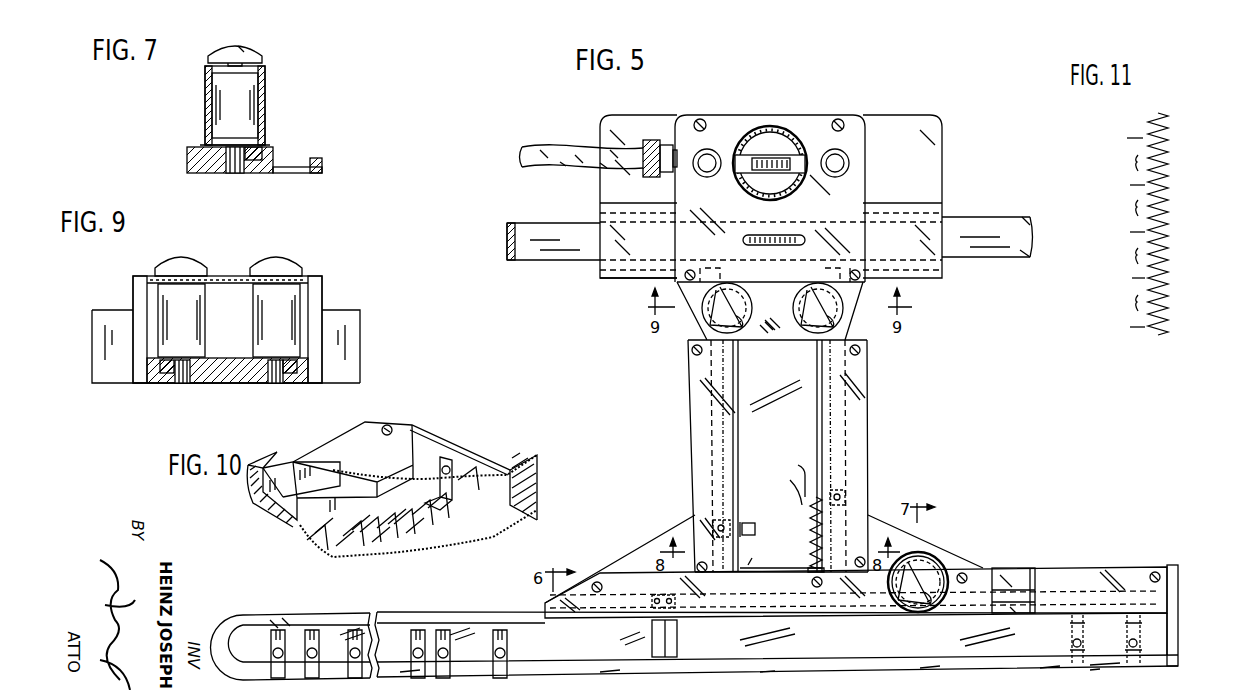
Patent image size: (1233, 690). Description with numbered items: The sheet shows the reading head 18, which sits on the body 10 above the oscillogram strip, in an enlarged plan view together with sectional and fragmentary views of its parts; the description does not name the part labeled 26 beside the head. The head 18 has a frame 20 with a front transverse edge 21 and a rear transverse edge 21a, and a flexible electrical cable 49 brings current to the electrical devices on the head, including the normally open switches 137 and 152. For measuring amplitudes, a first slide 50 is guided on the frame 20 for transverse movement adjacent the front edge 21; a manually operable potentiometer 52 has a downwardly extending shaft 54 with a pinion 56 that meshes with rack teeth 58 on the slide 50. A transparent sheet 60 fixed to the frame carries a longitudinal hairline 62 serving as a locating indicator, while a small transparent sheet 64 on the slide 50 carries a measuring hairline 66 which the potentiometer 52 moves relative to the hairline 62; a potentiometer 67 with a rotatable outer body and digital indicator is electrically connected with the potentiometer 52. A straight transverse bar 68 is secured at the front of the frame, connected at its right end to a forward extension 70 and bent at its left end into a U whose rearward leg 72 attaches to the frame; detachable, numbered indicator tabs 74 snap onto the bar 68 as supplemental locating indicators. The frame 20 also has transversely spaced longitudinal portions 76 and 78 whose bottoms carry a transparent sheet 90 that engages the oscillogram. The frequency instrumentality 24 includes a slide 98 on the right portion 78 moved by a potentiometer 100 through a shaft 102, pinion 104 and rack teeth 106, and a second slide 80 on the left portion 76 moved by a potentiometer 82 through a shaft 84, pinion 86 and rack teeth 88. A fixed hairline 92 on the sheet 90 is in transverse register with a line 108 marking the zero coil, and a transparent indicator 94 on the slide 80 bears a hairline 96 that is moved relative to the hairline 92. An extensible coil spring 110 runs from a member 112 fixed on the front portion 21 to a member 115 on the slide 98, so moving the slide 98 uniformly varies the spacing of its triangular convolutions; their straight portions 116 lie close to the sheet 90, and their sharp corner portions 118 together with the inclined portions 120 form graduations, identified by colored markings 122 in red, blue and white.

In FIG. 5, the body 10 is at (812, 532).
In FIG. 5, the reading head 18 is at (600, 279).
In FIG. 10, the frame 20 is at (537, 490).
In FIG. 5, the frame 20 is at (688, 392).
In FIG. 7, the front transverse edge 21 is at (187, 160).
In FIG. 5, the front transverse edge 21 is at (855, 616).
In FIG. 5, the rear transverse edge 21a is at (893, 116).
In FIG. 5, the instrumentality for reading frequency 24 is at (866, 491).
In FIG. 5, the pipe 26 is at (560, 235).
In FIG. 5, the flexible electrical cable 49 is at (566, 150).
In FIG. 7, the first slide 50 is at (262, 160).
In FIG. 5, the first slide 50 is at (1010, 577).
In FIG. 7, the manually operable potentiometer 52 is at (262, 53).
In FIG. 5, the manually operable potentiometer 52 is at (930, 558).
In FIG. 7, the shaft 54 is at (237, 173).
In FIG. 7, the pinion 56 is at (228, 173).
In FIG. 5, the pinion 56 is at (950, 566).
In FIG. 7, the rack teeth 58 is at (252, 173).
In FIG. 5, the rack teeth 58 is at (1033, 582).
In FIG. 7, the transparent sheet 60 is at (298, 173).
In FIG. 5, the transparent sheet 60 is at (695, 635).
In FIG. 5, the hairline 62 is at (557, 633).
In FIG. 5, the small transparent sheet 64 is at (652, 643).
In FIG. 5, the hairline 66 is at (677, 643).
In FIG. 5, the potentiometer 67 is at (778, 145).
In FIG. 7, the transverse bar 68 is at (322, 160).
In FIG. 5, the forward extension 70 is at (1178, 643).
In FIG. 5, the rearward leg 72 is at (480, 620).
In FIG. 5, the indicator tab 74 is at (276, 642).
In FIG. 5, the left frame portion 76 is at (698, 436).
In FIG. 10, the right frame portion 78 is at (262, 510).
In FIG. 5, the right frame portion 78 is at (857, 409).
In FIG. 9, the second slide 80 is at (165, 383).
In FIG. 5, the second slide 80 is at (734, 392).
In FIG. 9, the manually operable potentiometer 82 is at (190, 263).
In FIG. 5, the manually operable potentiometer 82 is at (749, 306).
In FIG. 9, the shaft 84 is at (188, 383).
In FIG. 9, the pinion 86 is at (205, 383).
In FIG. 5, the pinion 86 is at (690, 338).
In FIG. 9, the rack teeth 88 is at (176, 383).
In FIG. 5, the rack teeth 88 is at (725, 373).
In FIG. 10, the sheet of transparent material 90 is at (462, 544).
In FIG. 5, the sheet of transparent material 90 is at (763, 436).
In FIG. 5, the hairline 92 is at (750, 565).
In FIG. 5, the transparent indicator 94 is at (732, 528).
In FIG. 5, the hairline 96 is at (756, 529).
In FIG. 9, the slide 98 is at (322, 372).
In FIG. 5, the slide 98 is at (846, 436).
In FIG. 9, the manually operable potentiometer 100 is at (296, 263).
In FIG. 5, the manually operable potentiometer 100 is at (816, 288).
In FIG. 9, the shaft 102 is at (281, 383).
In FIG. 9, the pinion 104 is at (272, 383).
In FIG. 5, the pinion 104 is at (868, 338).
In FIG. 9, the rack teeth 106 is at (294, 383).
In FIG. 5, the rack teeth 106 is at (843, 373).
In FIG. 10, the line 108 is at (505, 540).
In FIG. 5, the line 108 is at (805, 562).
In FIG. 5, the extensible coil spring 110 is at (782, 483).
In FIG. 11, the extensible coil spring 110 is at (1160, 210).
In FIG. 10, the member 112 is at (455, 505).
In FIG. 5, the member 112 is at (808, 576).
In FIG. 5, the member 115 is at (815, 472).
In FIG. 10, the straight portions 116 is at (343, 557).
In FIG. 11, the straight portions 116 is at (1155, 130).
In FIG. 10, the corner portions 118 is at (377, 556).
In FIG. 11, the corner portions 118 is at (1148, 122).
In FIG. 10, the inclined convolution portions 120 is at (318, 541).
In FIG. 11, the colored markings 122 is at (1160, 160).
In FIG. 5, the normally open switch 137 is at (712, 150).
In FIG. 5, the normally open switch 152 is at (846, 150).